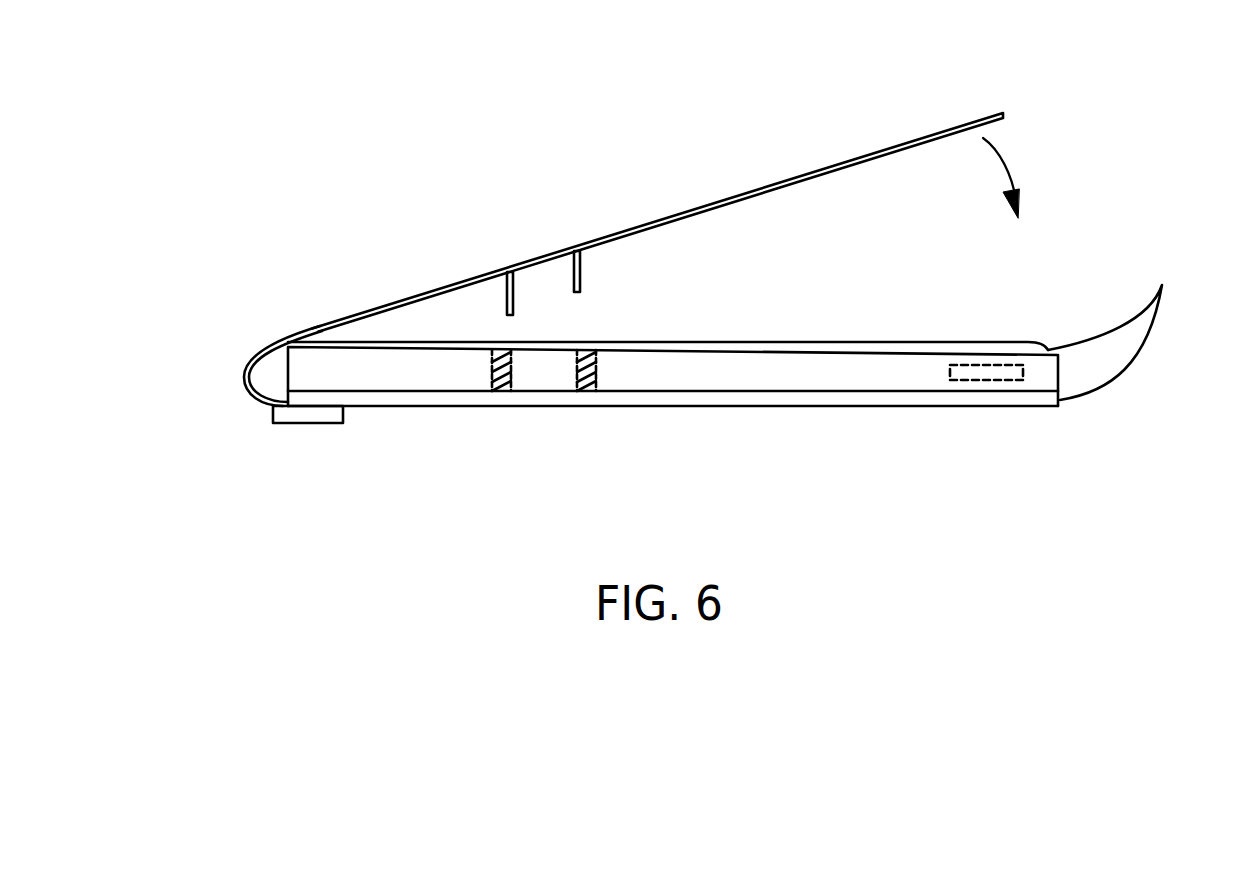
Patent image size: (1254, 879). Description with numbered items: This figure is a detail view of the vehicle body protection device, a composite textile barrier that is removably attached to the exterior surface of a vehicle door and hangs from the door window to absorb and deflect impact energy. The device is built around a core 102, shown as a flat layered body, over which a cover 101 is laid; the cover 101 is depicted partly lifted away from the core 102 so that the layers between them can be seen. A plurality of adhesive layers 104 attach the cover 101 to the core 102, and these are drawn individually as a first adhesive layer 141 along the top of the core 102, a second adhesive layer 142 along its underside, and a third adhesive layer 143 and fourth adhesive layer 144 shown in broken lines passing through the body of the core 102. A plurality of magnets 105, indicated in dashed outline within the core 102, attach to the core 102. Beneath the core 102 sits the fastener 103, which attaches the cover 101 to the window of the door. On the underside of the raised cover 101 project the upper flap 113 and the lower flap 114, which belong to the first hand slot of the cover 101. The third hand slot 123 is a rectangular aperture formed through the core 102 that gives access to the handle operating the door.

The cover 101 is at (875, 148).
The core 102 is at (318, 365).
The fastener 103 is at (307, 415).
The plurality of adhesive layers 104 is at (1116, 318).
The plurality of magnets 105 is at (988, 380).
The upper flap 113 is at (513, 300).
The lower flap 114 is at (580, 278).
The third hand slot 123 is at (536, 372).
The first adhesive layer 141 is at (838, 345).
The second adhesive layer 142 is at (866, 400).
The third adhesive layer 143 is at (500, 391).
The fourth adhesive layer 144 is at (587, 391).